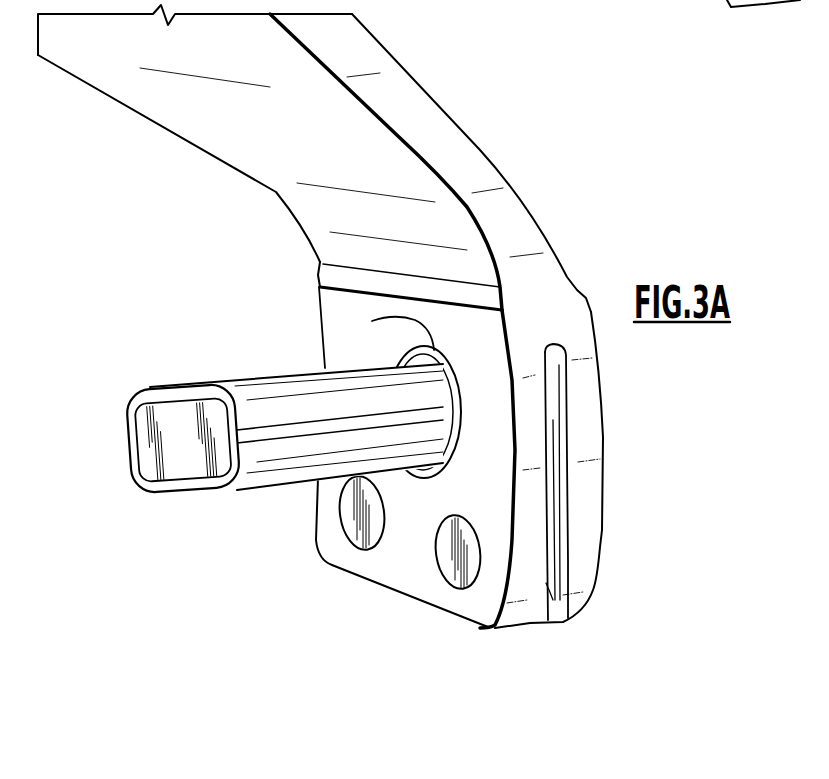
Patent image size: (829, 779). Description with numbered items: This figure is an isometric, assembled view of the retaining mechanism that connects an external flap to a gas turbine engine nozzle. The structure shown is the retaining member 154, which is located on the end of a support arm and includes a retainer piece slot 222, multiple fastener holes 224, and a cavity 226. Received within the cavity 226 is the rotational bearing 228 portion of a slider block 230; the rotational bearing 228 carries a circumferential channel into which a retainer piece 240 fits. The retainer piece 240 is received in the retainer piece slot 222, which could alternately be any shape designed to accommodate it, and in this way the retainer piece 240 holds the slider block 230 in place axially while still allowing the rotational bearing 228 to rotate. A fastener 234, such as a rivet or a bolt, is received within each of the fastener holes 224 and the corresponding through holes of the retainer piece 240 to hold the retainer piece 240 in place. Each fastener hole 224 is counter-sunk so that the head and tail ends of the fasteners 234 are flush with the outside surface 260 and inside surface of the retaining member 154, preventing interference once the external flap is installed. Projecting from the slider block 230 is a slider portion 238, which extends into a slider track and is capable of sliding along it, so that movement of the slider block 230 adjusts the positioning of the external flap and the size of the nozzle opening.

The retaining member 154 is at (537, 138).
The retainer piece slot 222 is at (558, 403).
The fastener holes 224 is at (345, 532).
The cavity 226 is at (372, 320).
The rotational bearing 228 is at (392, 356).
The slider block 230 is at (125, 483).
The fastener 234 is at (456, 555).
The slider portion 238 is at (232, 385).
The retainer piece 240 is at (545, 588).
The outside surface 260 is at (604, 550).